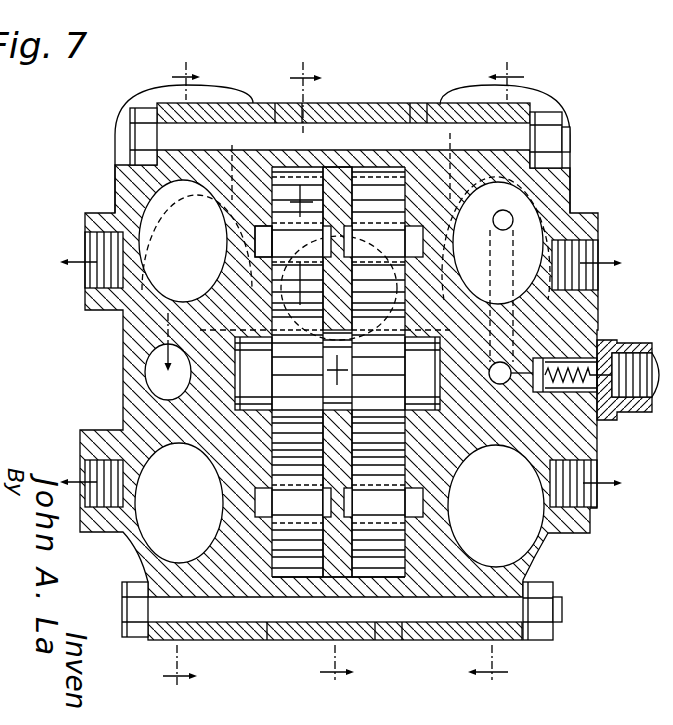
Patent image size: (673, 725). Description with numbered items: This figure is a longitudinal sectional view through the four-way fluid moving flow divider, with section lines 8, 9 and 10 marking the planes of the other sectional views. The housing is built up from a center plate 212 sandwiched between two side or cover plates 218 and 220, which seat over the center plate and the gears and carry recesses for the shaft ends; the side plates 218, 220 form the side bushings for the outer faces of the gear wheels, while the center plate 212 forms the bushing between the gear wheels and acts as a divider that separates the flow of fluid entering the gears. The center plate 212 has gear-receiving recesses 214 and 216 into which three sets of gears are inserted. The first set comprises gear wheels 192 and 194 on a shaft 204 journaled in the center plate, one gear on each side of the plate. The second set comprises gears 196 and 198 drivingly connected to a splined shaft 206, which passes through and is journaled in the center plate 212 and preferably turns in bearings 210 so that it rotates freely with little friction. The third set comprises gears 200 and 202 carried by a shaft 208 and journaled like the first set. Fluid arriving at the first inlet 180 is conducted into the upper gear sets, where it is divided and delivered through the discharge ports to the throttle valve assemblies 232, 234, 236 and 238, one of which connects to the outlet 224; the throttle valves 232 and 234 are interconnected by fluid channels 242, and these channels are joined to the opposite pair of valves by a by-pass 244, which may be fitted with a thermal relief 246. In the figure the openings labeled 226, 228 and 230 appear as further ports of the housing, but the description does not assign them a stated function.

The section line 8- 8 is at (177, 382).
The section line 9- 9 is at (312, 382).
The section line 10- 10 is at (511, 381).
The first inlet 180 is at (147, 377).
The gear wheel 192 is at (293, 214).
The gear wheel 194 is at (383, 214).
The gear 196 is at (297, 318).
The gear 198 is at (378, 318).
The gear 200 is at (293, 476).
The gear 202 is at (374, 476).
The shaft 204 is at (257, 250).
The splined shaft 206 is at (260, 387).
The shaft 208 is at (415, 494).
The bearings 210 is at (418, 396).
The center plate 212 is at (363, 637).
The gear-receiving recess 214 is at (310, 563).
The gear-receiving recess 216 is at (397, 562).
The side plate 218 is at (543, 561).
The side plate 220 is at (137, 408).
The outlet 224 is at (93, 245).
The outlet port 226 is at (588, 253).
The inlet port 228 is at (81, 472).
The outlet port 230 is at (584, 501).
The throttle valve assembly 232 is at (183, 241).
The throttle valve assembly 234 is at (498, 272).
The throttle valve assembly 236 is at (179, 503).
The throttle valve assembly 238 is at (496, 506).
The fluid channels 242 is at (415, 162).
The by-pass 244 is at (503, 367).
The thermal relief 246 is at (608, 413).